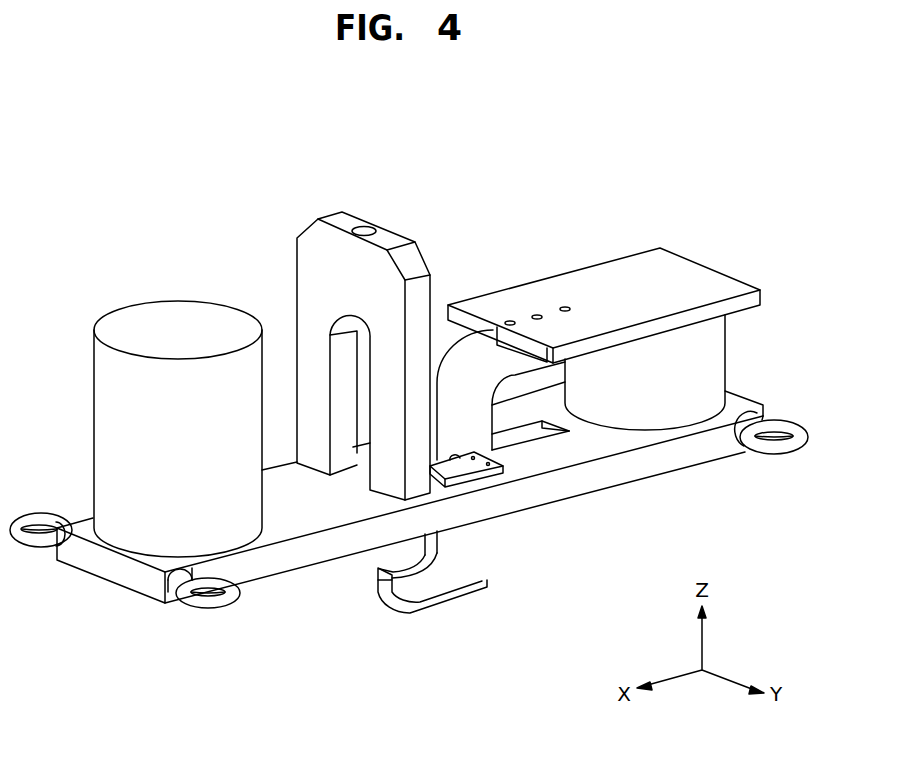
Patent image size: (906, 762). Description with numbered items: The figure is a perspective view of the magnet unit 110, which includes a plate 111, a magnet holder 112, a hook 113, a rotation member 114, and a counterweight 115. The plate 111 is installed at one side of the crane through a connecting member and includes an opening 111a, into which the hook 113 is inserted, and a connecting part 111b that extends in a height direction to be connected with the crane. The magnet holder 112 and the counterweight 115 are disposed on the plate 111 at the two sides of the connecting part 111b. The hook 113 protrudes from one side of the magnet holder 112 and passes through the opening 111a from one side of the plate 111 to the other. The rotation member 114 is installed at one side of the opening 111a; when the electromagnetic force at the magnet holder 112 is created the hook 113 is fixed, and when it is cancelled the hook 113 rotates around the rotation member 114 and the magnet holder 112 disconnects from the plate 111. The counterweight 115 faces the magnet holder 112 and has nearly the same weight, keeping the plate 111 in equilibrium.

The magnet unit 110 is at (677, 204).
The plate 111 is at (607, 468).
The opening 111a is at (522, 437).
The connecting part 111b is at (310, 302).
The magnet holder 112 is at (711, 354).
The hook 113 is at (477, 348).
The rotation member 114 is at (465, 467).
The counterweight 115 is at (107, 390).